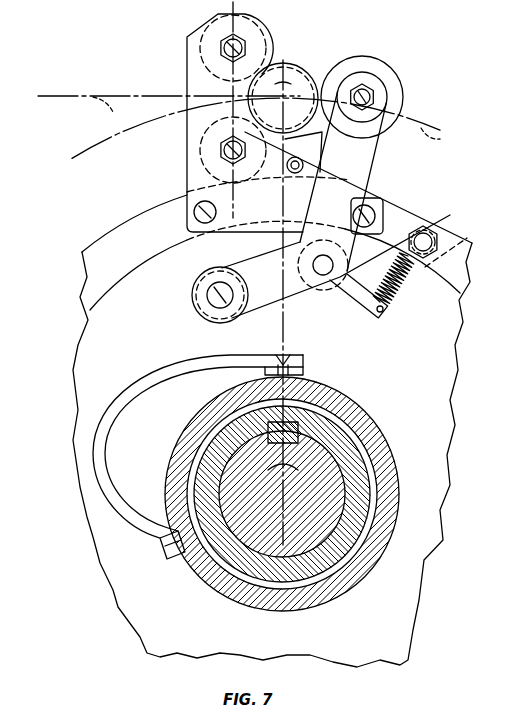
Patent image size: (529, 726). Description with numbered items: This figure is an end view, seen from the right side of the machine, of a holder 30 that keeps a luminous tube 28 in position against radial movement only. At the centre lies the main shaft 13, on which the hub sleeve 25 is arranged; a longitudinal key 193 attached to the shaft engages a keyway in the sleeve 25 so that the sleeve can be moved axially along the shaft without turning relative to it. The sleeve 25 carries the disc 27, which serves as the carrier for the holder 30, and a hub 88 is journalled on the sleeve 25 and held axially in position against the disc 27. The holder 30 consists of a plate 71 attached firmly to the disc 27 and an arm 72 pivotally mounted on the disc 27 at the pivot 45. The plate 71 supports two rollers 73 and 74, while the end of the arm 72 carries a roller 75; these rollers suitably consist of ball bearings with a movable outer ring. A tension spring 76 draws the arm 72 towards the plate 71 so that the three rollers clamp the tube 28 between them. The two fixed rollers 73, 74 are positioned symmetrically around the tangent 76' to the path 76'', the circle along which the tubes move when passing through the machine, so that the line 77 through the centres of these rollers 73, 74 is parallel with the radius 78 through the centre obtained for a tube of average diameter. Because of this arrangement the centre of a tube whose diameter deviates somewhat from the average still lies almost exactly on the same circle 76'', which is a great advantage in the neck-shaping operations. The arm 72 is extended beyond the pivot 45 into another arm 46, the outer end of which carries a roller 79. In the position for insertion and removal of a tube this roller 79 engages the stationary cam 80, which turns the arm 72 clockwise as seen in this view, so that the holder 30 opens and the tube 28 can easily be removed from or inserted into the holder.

The main shaft 13 is at (332, 528).
The hub sleeve 25 is at (370, 478).
The disc 27 is at (456, 312).
The tube 28 is at (314, 79).
The holder 30 is at (352, 56).
The pivot 45 is at (328, 277).
The arm 46 is at (275, 307).
The plate 71 is at (187, 153).
The arm 72 is at (374, 167).
The roller 73 is at (267, 39).
The roller 74 is at (203, 164).
The roller 75 is at (401, 102).
The tension spring 76 is at (427, 261).
The tangent 76' is at (111, 107).
The path 76'' is at (443, 137).
The line 77 is at (270, 58).
The radius 78 is at (286, 350).
The roller 79 is at (223, 322).
The stationary cam 80 is at (153, 357).
The hub 88 is at (363, 430).
The longitudinal key 193 is at (300, 425).